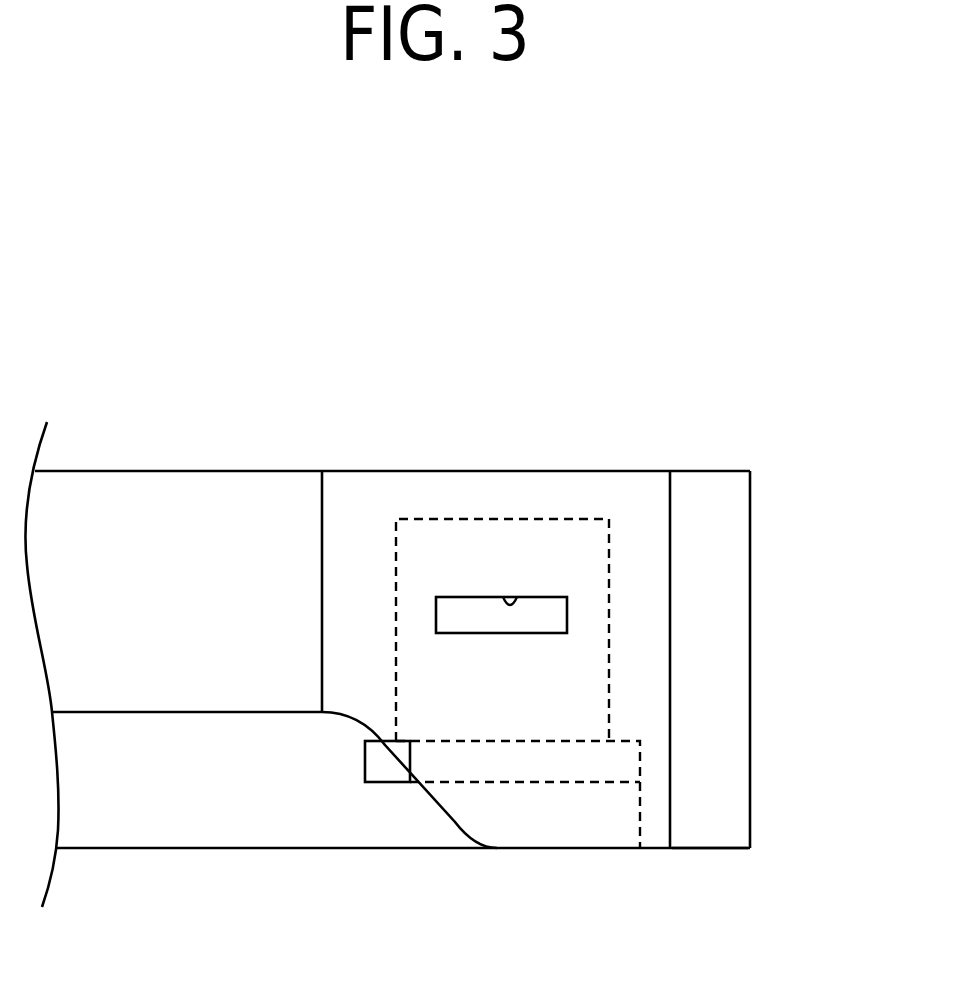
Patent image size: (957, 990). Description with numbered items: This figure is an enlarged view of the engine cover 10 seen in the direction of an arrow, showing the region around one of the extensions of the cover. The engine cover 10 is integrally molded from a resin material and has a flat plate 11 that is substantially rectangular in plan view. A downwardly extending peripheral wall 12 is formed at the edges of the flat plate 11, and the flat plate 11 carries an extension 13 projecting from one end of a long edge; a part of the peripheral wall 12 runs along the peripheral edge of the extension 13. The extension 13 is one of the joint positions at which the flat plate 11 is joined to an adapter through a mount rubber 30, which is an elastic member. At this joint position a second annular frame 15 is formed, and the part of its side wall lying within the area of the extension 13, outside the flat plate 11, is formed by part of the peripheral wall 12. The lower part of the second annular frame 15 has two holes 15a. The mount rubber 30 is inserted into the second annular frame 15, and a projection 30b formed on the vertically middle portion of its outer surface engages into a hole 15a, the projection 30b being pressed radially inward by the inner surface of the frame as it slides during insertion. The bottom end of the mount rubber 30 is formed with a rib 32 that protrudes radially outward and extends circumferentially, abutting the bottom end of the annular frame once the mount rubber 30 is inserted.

The engine cover 10 is at (418, 470).
The flat plate 11 is at (210, 470).
The peripheral wall 12 is at (708, 850).
The extension 13 is at (637, 471).
The second annular frame 15 is at (647, 670).
The hole 15a is at (510, 605).
The mount rubber 30 is at (399, 783).
The projection 30b is at (537, 611).
The rib 32 is at (380, 768).